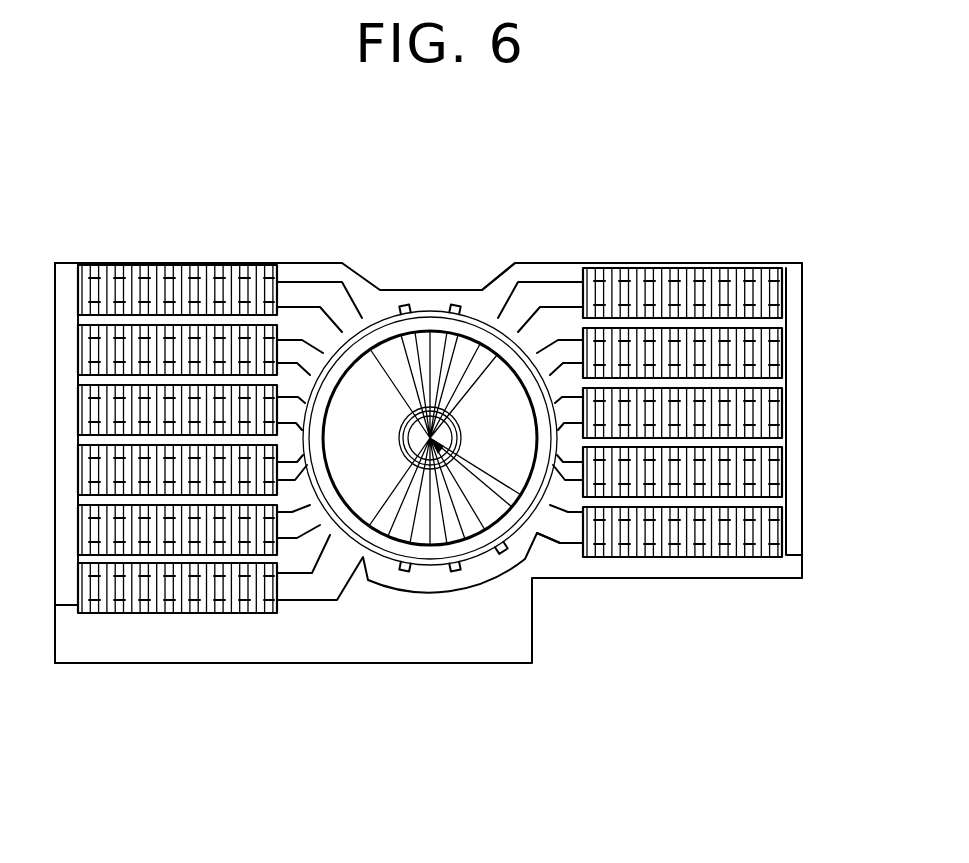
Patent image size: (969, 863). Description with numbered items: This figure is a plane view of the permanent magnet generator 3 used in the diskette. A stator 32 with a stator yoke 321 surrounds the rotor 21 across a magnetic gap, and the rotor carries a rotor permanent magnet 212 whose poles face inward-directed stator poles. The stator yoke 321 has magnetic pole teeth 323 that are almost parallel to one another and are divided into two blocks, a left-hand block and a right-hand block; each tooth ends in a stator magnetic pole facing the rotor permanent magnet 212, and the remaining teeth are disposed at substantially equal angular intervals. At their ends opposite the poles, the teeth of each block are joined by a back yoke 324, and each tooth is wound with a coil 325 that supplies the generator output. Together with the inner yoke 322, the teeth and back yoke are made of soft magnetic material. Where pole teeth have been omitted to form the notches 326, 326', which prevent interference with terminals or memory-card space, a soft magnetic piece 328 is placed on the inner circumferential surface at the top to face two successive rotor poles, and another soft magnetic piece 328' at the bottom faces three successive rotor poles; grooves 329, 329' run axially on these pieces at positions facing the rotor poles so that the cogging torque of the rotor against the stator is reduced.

The permanent magnet generator 3 is at (842, 212).
The rotor 21 is at (302, 440).
The rotor permanent magnet 212 is at (550, 438).
The generator stator 32 is at (537, 270).
The stator yoke 321 is at (573, 415).
The inner yoke 322 is at (337, 540).
The magnetic pole teeth 323 is at (573, 357).
The back yoke 324 is at (790, 342).
The coil 325 is at (735, 532).
The notch 326 is at (427, 236).
The notch 326' is at (439, 620).
The soft magnetic piece 328 is at (508, 237).
The soft magnetic piece 328' is at (568, 624).
The groove 329 is at (437, 248).
The groove 329' is at (447, 629).